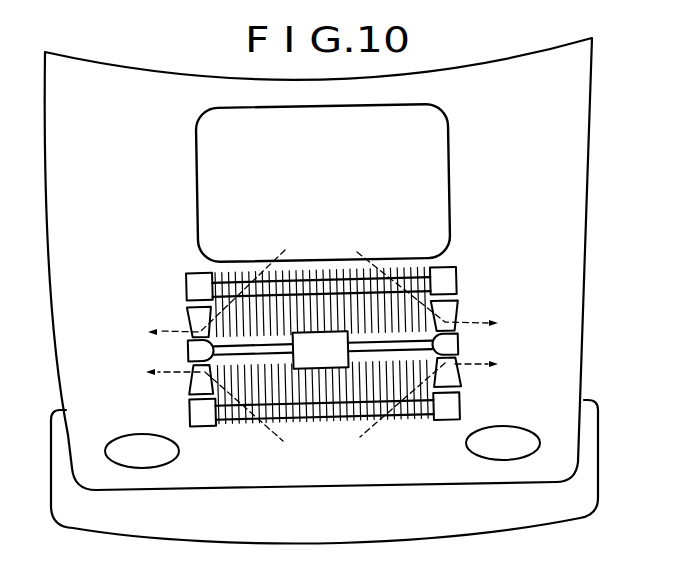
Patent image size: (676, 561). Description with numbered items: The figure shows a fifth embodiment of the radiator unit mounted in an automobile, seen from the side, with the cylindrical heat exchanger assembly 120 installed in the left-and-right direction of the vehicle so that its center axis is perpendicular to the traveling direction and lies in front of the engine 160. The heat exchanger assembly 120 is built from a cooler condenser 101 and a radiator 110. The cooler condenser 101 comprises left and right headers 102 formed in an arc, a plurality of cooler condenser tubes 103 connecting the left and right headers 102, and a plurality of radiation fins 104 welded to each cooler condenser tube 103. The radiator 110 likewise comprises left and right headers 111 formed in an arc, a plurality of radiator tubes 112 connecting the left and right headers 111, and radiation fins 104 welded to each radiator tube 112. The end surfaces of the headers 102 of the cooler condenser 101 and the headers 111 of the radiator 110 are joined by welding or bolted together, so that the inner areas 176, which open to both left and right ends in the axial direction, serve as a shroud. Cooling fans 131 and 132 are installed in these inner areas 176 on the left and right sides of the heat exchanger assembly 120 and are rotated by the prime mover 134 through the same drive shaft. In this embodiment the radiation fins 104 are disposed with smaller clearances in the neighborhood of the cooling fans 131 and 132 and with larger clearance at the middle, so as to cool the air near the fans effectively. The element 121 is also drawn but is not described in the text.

The cooler condenser 101 is at (468, 263).
The headers 102 is at (186, 276).
The cooler condenser tubes 103 is at (331, 289).
The radiation fins 104 is at (227, 268).
The radiator 110 is at (474, 407).
The headers 111 is at (376, 464).
The radiator tubes 112 is at (312, 350).
The heat exchanger assembly 120 is at (350, 436).
The upper left deflector 121 is at (198, 318).
The cooling fan 131 is at (200, 377).
The cooling fan 132 is at (452, 383).
The prime mover 134 is at (314, 398).
The engine 160 is at (431, 124).
The inner areas 176 is at (447, 304).